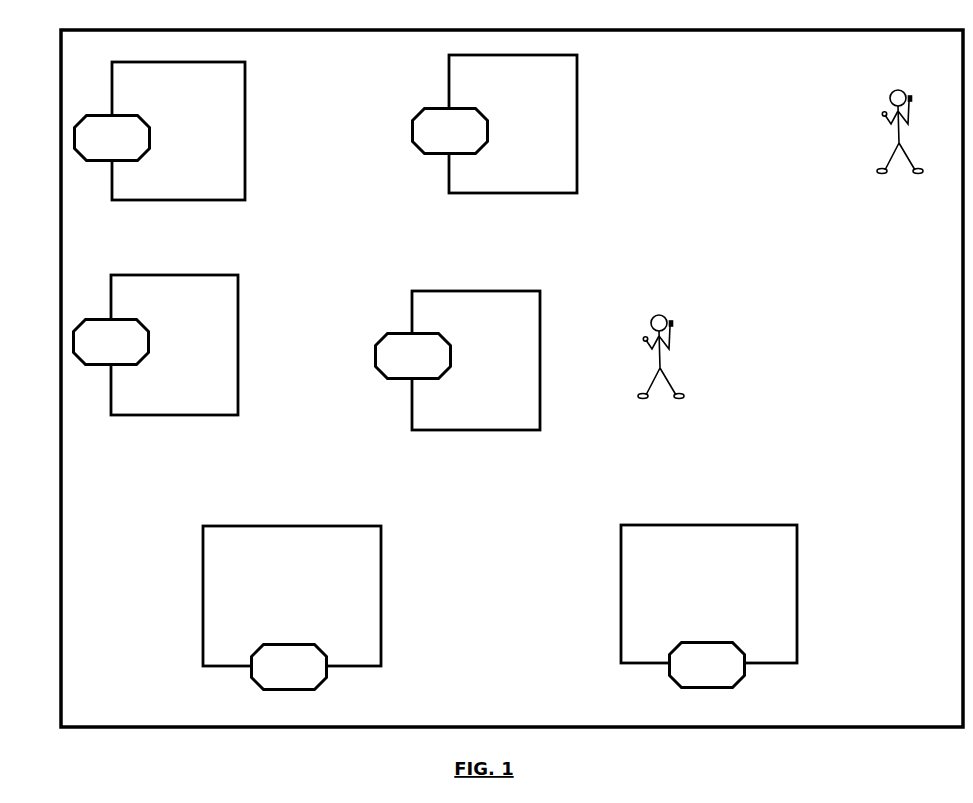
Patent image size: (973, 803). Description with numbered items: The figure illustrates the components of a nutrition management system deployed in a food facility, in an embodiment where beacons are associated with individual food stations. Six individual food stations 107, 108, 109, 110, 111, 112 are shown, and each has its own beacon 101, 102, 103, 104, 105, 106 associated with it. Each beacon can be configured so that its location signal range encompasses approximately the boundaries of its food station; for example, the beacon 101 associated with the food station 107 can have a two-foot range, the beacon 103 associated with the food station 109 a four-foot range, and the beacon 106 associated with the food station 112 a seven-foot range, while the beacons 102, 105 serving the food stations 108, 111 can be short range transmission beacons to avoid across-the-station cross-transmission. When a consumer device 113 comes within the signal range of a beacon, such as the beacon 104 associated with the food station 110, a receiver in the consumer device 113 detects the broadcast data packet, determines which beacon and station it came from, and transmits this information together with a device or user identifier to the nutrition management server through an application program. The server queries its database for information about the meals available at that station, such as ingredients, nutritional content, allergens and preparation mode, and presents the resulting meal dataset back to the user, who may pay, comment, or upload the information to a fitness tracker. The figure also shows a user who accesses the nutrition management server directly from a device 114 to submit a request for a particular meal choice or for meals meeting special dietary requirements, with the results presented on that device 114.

The beacon 101 is at (112, 138).
The beacon 102 is at (111, 342).
The beacon 103 is at (450, 131).
The beacon 104 is at (413, 356).
The beacon 105 is at (289, 667).
The beacon 106 is at (707, 665).
The food station 107 is at (178, 131).
The food station 108 is at (174, 345).
The food station 109 is at (513, 124).
The food station 110 is at (476, 360).
The food station 111 is at (292, 596).
The food station 112 is at (709, 594).
The consumer device 113 is at (661, 345).
The device 114 is at (900, 119).